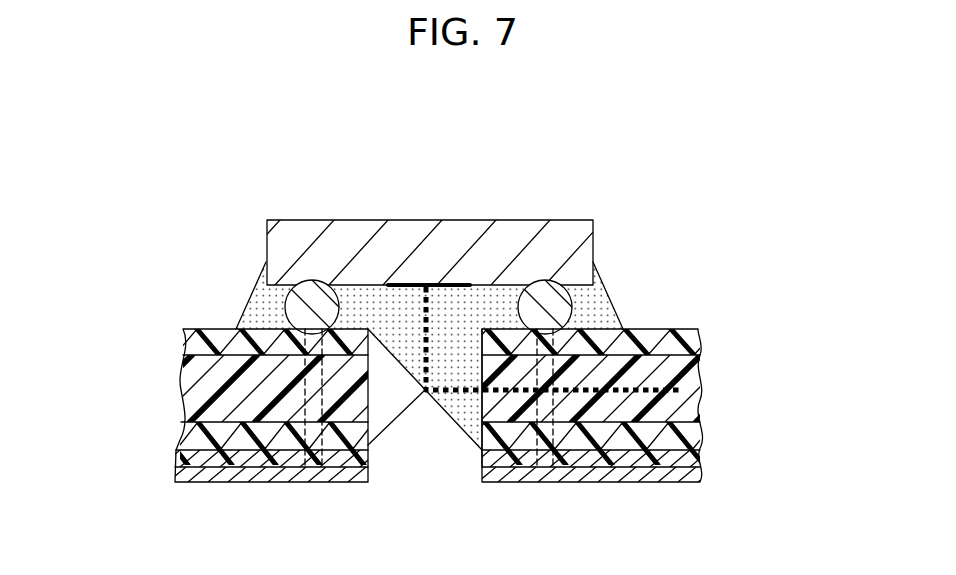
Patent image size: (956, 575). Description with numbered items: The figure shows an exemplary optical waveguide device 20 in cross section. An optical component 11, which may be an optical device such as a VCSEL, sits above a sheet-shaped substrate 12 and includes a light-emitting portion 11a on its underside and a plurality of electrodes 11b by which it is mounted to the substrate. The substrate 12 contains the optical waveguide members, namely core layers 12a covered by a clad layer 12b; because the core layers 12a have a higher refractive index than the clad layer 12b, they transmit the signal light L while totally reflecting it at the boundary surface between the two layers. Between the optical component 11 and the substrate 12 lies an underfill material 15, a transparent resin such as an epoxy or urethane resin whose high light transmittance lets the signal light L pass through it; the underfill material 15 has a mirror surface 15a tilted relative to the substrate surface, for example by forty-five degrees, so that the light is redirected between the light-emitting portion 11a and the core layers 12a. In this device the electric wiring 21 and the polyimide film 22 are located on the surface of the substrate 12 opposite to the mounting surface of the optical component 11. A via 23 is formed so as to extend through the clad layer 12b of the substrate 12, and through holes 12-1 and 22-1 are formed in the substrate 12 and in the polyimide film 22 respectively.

The optical waveguide device 20 is at (190, 220).
The optical component 11 is at (593, 228).
The light-emitting portion 11a is at (452, 290).
The electrodes 11b is at (287, 303).
The underfill material 15 is at (257, 283).
The mirror surface 15a is at (425, 389).
The substrate 12 is at (813, 337).
The core layers 12a is at (700, 402).
The clad layer 12b is at (665, 422).
The through hole 12-1 is at (370, 443).
The polyimide film 22 is at (175, 453).
The through hole 22-1 is at (482, 462).
The electric wiring 21 is at (175, 475).
The via 23 is at (317, 410).
The signal light L is at (646, 393).